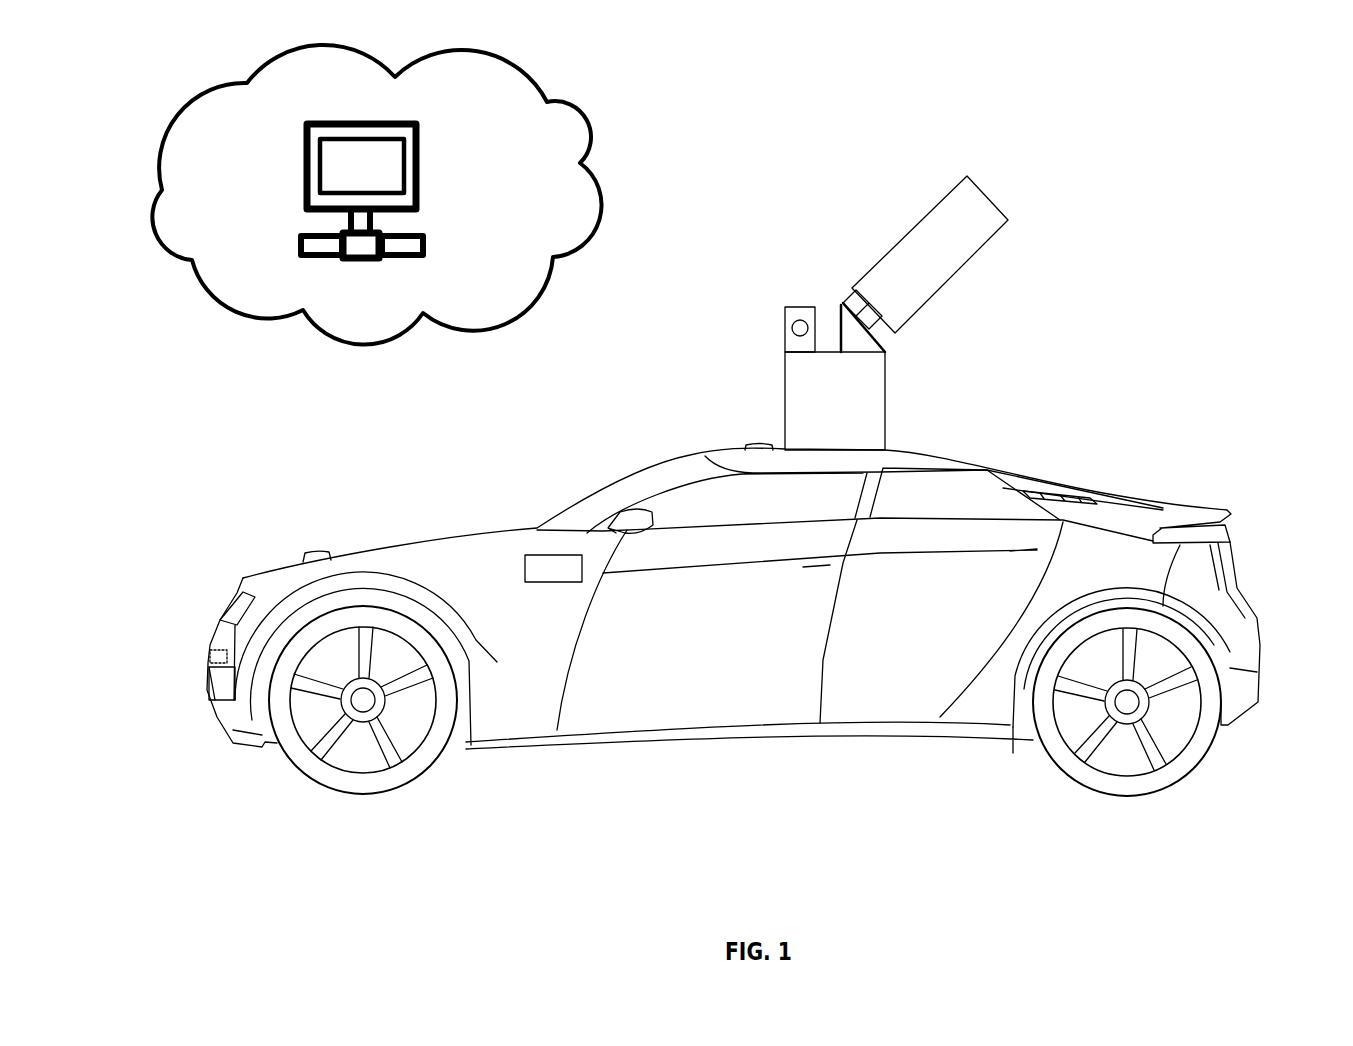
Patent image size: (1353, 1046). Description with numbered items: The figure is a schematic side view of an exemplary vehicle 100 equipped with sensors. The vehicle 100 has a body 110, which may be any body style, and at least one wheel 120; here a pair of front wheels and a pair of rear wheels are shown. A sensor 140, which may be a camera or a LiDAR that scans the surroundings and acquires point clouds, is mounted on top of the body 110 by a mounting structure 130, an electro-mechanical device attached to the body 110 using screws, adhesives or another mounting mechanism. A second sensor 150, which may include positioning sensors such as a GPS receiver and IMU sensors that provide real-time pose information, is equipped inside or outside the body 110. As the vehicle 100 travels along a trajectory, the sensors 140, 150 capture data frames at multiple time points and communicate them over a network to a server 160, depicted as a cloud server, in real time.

The vehicle 100 is at (736, 464).
The body 110 is at (764, 507).
The wheel 120 is at (1250, 760).
The mounting structure 130 is at (778, 298).
The sensor 140 is at (867, 258).
The sensor 150 is at (552, 553).
The server 160 is at (452, 166).